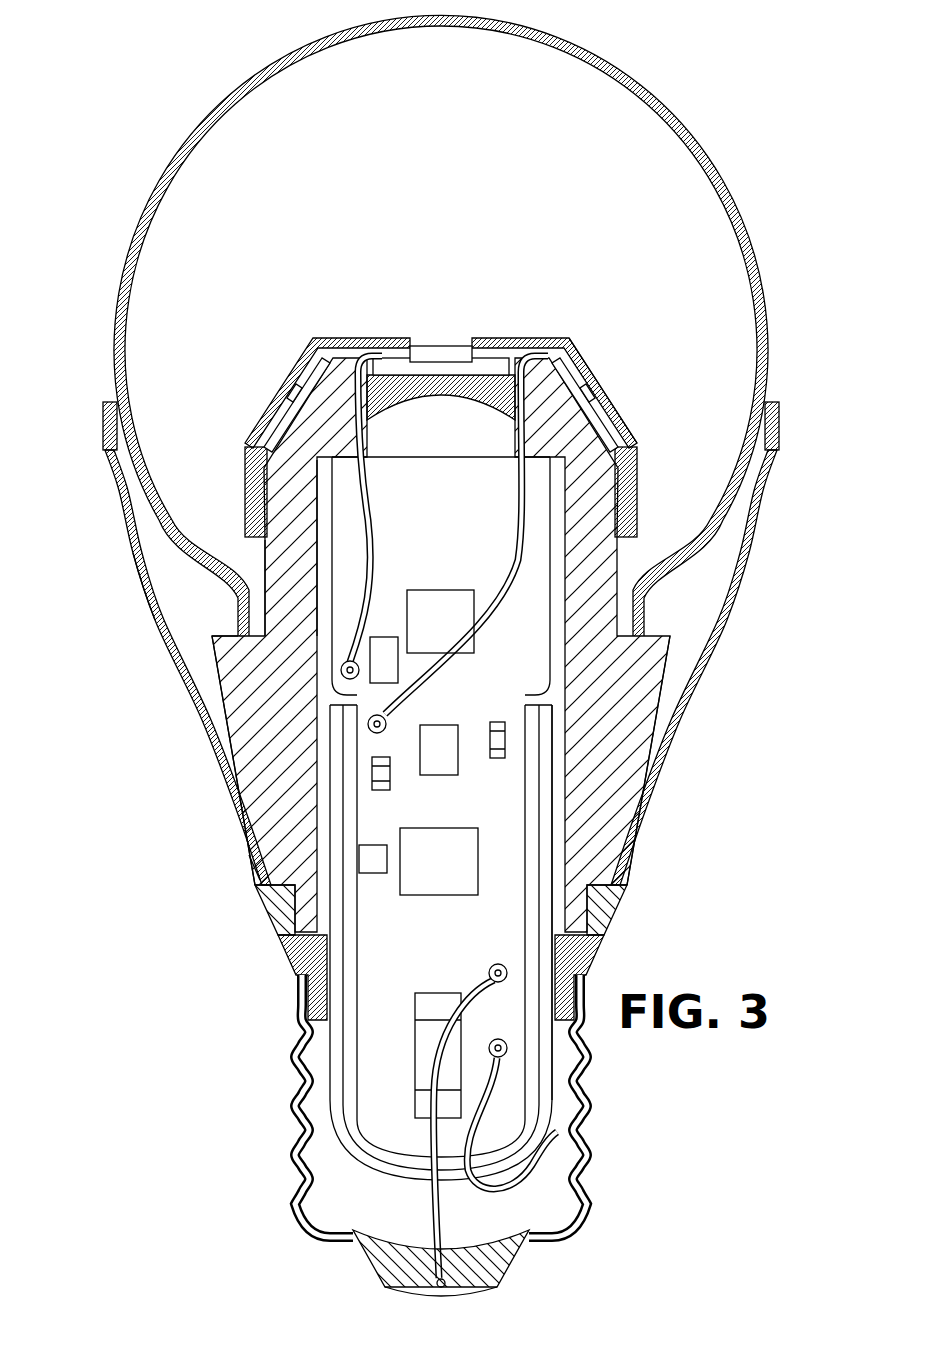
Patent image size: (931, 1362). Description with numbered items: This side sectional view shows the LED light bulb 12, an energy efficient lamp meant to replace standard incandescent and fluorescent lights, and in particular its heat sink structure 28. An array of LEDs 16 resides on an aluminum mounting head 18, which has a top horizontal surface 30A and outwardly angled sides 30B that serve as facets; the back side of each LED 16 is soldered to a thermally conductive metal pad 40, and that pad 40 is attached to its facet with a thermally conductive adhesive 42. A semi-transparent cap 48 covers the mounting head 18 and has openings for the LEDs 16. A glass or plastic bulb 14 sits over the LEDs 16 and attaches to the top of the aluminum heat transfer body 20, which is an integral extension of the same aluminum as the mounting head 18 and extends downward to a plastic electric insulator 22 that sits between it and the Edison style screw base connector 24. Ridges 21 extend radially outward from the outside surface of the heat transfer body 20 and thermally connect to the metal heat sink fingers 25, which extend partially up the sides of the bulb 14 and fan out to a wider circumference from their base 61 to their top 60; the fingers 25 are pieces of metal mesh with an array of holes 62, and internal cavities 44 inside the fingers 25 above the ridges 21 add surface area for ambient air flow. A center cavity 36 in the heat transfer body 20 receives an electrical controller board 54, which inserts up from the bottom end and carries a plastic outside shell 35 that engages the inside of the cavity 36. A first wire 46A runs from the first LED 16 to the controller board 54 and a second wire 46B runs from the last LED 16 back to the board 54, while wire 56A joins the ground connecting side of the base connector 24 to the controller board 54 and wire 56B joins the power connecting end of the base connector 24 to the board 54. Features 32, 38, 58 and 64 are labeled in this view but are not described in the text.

The LED light bulb 12 is at (735, 110).
The bulb 14 is at (280, 62).
The LEDs 16 is at (465, 360).
The aluminum mounting head 18 is at (492, 397).
The heat transfer body 20 is at (275, 825).
The ridges 21 is at (218, 680).
The electric insulator 22 is at (283, 957).
The base connector 24 is at (293, 1133).
The heat sink fingers 25 is at (747, 568).
The heat sink structure 28 is at (168, 815).
The top horizontal surface 30A is at (527, 352).
The outwardly angled sides 30B is at (634, 472).
The neck of heat sink 32 is at (283, 547).
The plastic outside shell 35 is at (537, 842).
The center cavity 36 is at (327, 760).
The ring 38 is at (263, 910).
The metal pad 40 is at (434, 360).
The thermally conductive adhesive 42 is at (393, 375).
The internal cavities 44 is at (150, 522).
The first wire 46A is at (367, 494).
The second wire 46B is at (503, 538).
The semi-transparent cap 48 is at (355, 338).
The electrical controller board 54 is at (367, 1077).
The wire 56A is at (560, 1178).
The wire 56B is at (428, 1202).
The shoulder 58 is at (212, 640).
The top 60 is at (105, 406).
The base 61 is at (252, 874).
The holes 62 is at (143, 601).
The shell inner surface 64 is at (145, 552).